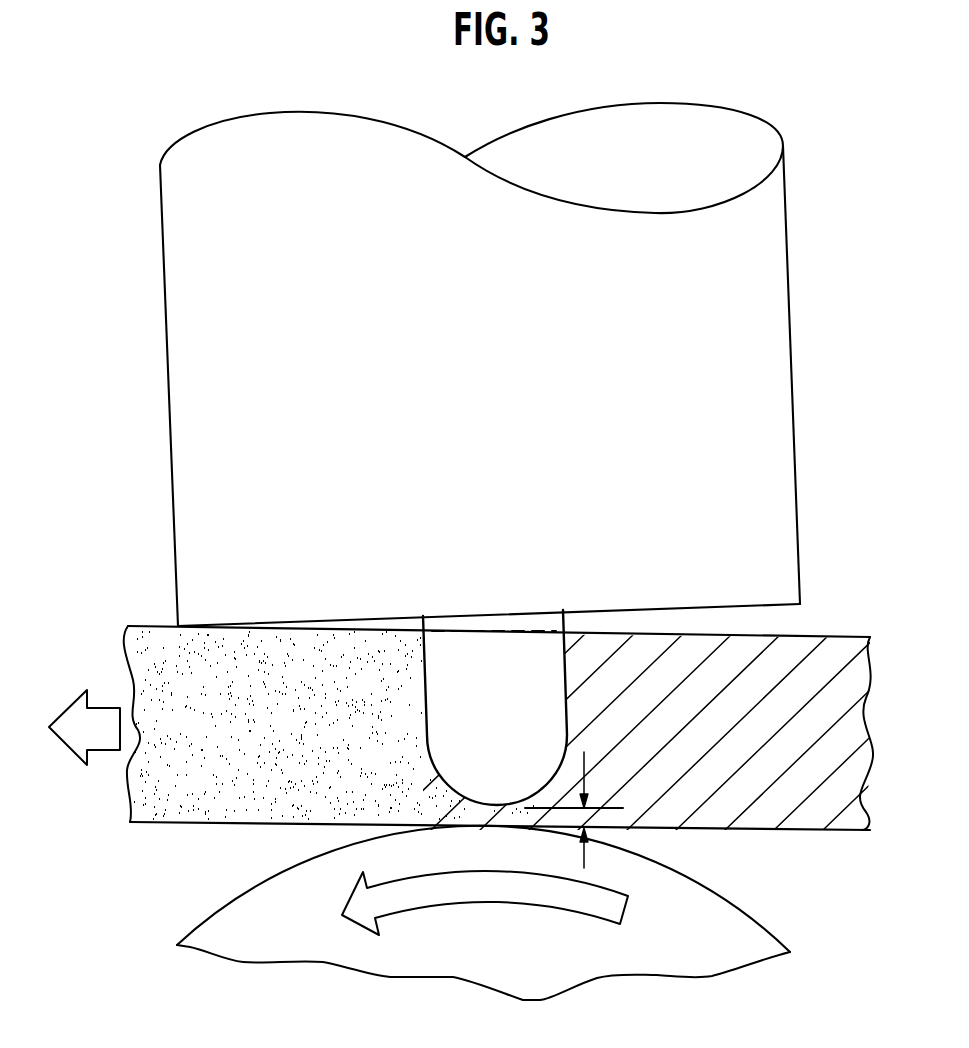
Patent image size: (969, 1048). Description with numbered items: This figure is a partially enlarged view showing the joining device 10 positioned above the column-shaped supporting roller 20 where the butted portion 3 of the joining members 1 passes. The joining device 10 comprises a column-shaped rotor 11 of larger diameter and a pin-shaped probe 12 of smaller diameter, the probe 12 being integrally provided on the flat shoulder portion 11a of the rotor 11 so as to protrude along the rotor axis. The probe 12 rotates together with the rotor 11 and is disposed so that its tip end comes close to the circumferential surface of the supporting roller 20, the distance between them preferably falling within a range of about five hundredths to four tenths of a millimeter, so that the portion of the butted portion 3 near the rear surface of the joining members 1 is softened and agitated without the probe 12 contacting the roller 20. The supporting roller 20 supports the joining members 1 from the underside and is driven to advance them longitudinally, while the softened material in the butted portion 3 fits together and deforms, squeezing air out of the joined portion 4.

The joining member 1 is at (149, 618).
The butted portion 3 is at (707, 823).
The joined portion 4 is at (262, 808).
The joining device 10 is at (156, 302).
The rotor 11 is at (776, 378).
The shoulder portion 11a is at (775, 605).
The probe 12 is at (548, 708).
The supporting roller 20 is at (232, 918).